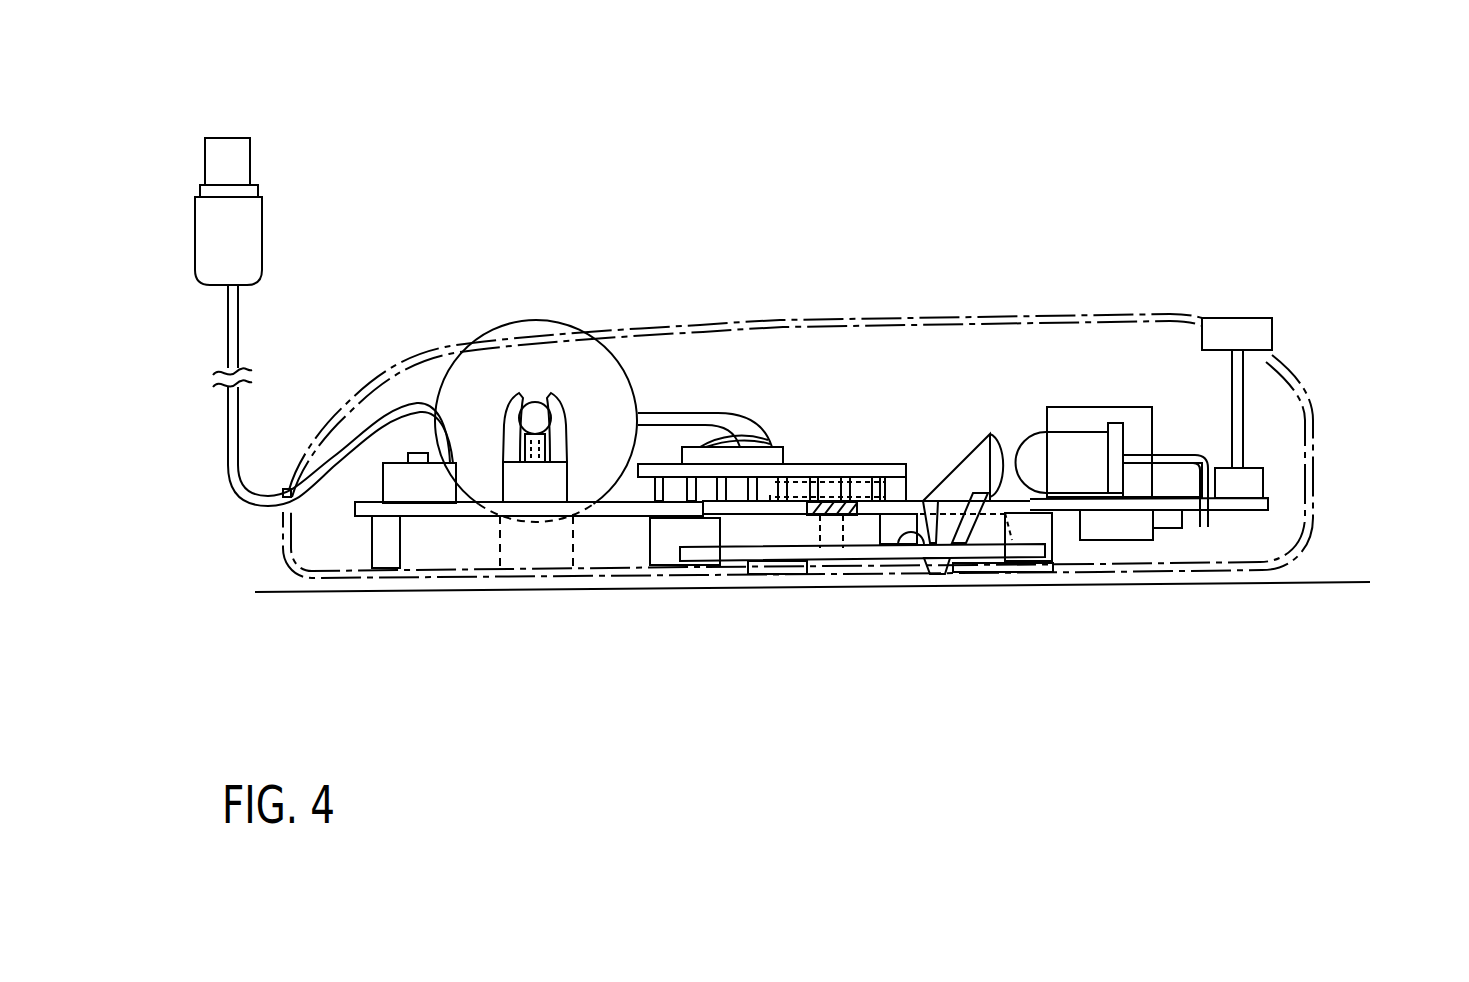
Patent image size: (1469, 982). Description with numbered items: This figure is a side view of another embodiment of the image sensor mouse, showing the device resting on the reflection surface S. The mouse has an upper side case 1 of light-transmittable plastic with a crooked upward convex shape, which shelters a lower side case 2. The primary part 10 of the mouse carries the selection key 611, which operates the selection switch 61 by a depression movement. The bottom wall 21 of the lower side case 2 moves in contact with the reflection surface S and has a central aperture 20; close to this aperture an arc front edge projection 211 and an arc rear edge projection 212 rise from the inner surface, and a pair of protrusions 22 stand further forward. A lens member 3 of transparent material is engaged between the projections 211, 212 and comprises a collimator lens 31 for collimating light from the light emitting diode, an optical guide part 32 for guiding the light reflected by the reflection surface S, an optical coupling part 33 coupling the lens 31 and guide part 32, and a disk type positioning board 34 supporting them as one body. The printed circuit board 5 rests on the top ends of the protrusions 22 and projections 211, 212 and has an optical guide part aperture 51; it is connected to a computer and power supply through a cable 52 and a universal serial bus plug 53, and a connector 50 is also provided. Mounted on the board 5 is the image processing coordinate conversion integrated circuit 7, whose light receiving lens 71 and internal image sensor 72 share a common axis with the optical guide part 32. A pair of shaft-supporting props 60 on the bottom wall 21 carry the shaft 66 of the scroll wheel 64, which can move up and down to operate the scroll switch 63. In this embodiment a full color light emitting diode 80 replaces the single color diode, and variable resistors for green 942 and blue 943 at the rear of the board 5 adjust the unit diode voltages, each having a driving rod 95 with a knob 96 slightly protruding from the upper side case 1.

The upper side case 1 is at (798, 392).
The lower side case 2 is at (1128, 572).
The lens member 3 is at (966, 456).
The printed circuit board 5 is at (1236, 506).
The image processing coordinate conversion integrated circuit 7 is at (662, 470).
The primary part 10 is at (680, 320).
The central aperture 20 is at (803, 568).
The bottom wall 21 is at (427, 576).
The protrusions 22 is at (378, 545).
The collimator lens 31 is at (1004, 432).
The optical guide part 32 is at (827, 540).
The optical coupling part 33 is at (933, 497).
The positioning board 34 is at (730, 550).
The connector 50 is at (753, 458).
The optical guide part aperture 51 is at (735, 516).
The cable 52 is at (228, 443).
The universal serial bus plug 53 is at (203, 168).
The shaft-supporting props 60 is at (510, 537).
The selection switch 61 is at (412, 453).
The selection key 611 is at (350, 430).
The scroll switch 63 is at (573, 464).
The scroll wheel 64 is at (507, 318).
The shaft 66 is at (537, 412).
The light receiving lens 71 is at (795, 512).
The image sensor 72 is at (763, 508).
The full color light emitting diode 80 is at (1080, 447).
The driving rod 95 is at (1240, 413).
The knob 96 is at (1262, 316).
The variable resistor for green 942 is at (1336, 410).
The variable resistor for blue 943 is at (1252, 478).
The arc front edge projection 211 is at (660, 540).
The arc rear edge projection 212 is at (1043, 534).
The reflection surface S is at (1315, 580).